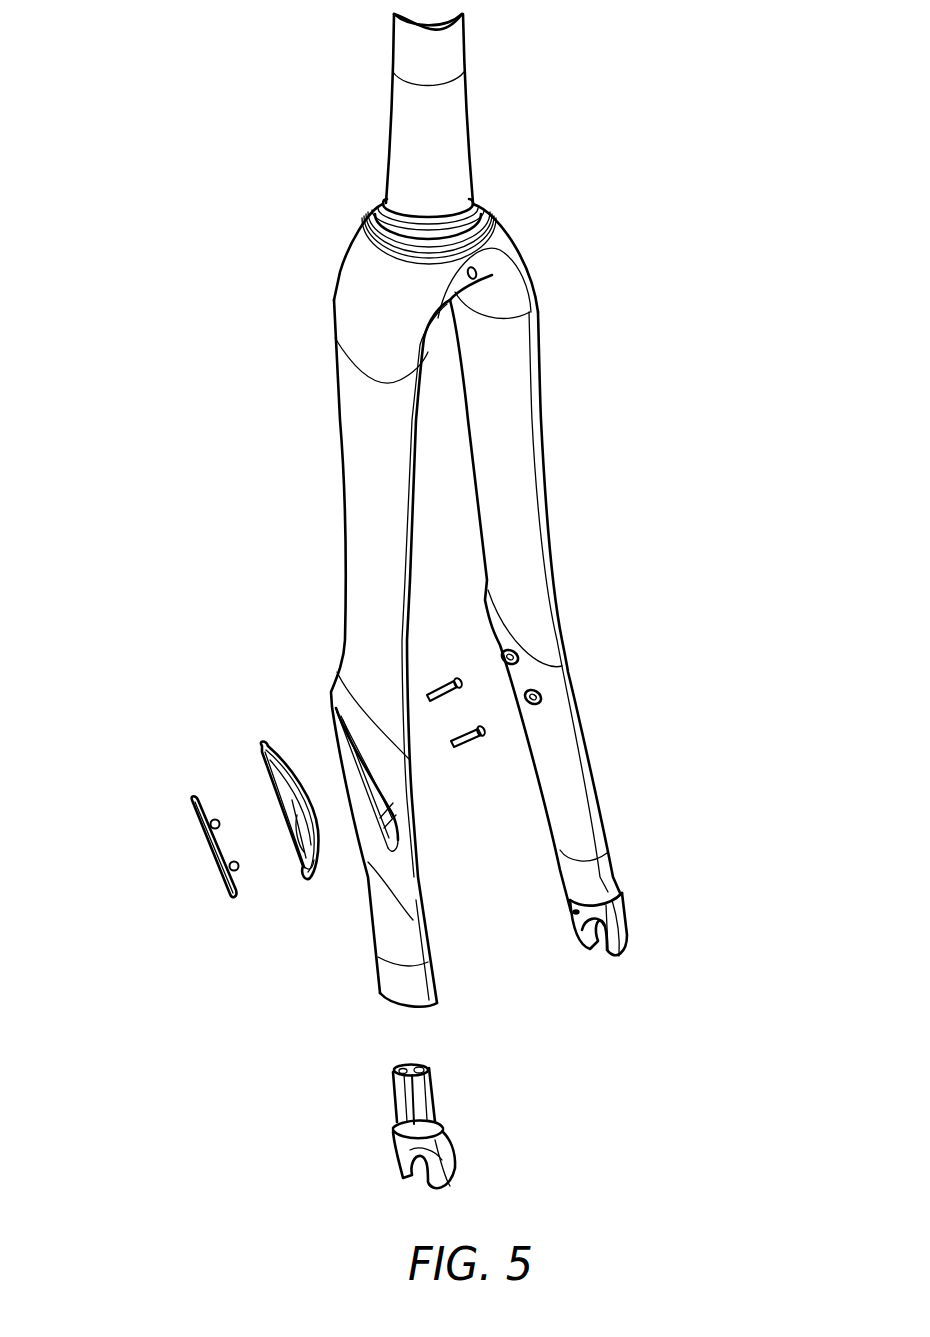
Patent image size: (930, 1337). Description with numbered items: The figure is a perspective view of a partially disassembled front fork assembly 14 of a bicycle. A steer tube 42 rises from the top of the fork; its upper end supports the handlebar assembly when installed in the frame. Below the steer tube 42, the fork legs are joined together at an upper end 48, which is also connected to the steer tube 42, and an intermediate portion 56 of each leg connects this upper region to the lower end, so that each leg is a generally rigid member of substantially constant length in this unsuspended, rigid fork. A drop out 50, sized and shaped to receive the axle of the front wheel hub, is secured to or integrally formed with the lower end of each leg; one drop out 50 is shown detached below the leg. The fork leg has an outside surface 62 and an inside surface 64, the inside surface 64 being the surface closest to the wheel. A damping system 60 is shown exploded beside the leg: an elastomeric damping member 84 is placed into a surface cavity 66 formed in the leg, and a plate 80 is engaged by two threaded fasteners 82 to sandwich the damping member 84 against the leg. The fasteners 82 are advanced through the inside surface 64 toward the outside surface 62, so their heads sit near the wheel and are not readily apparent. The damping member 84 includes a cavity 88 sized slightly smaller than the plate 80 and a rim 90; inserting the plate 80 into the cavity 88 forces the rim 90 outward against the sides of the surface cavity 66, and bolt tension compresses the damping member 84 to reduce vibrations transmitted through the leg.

The front fork assembly 14 is at (560, 355).
The steer tube 42 is at (448, 142).
The upper end 48 is at (500, 250).
The drop out 50 is at (583, 960).
The intermediate portion 56 is at (535, 582).
The damping system 60 is at (118, 785).
The outside surface 62 is at (375, 862).
The inside surface 64 is at (562, 807).
The surface cavity 66 is at (340, 743).
The plate 80 is at (223, 872).
The threaded fastener 82 is at (460, 682).
The damping member 84 is at (260, 758).
The cavity 88 is at (297, 833).
The rim 90 is at (303, 878).